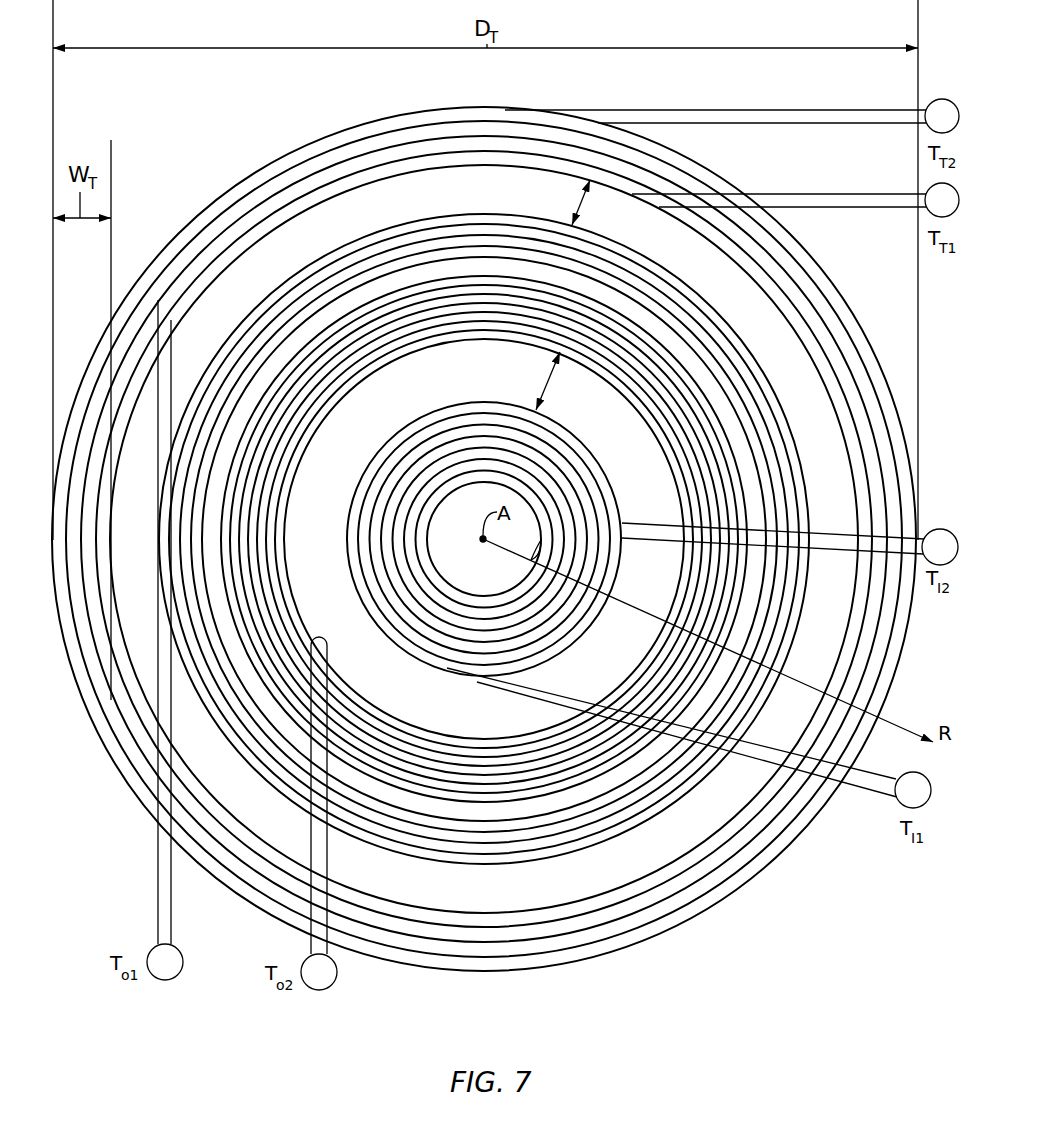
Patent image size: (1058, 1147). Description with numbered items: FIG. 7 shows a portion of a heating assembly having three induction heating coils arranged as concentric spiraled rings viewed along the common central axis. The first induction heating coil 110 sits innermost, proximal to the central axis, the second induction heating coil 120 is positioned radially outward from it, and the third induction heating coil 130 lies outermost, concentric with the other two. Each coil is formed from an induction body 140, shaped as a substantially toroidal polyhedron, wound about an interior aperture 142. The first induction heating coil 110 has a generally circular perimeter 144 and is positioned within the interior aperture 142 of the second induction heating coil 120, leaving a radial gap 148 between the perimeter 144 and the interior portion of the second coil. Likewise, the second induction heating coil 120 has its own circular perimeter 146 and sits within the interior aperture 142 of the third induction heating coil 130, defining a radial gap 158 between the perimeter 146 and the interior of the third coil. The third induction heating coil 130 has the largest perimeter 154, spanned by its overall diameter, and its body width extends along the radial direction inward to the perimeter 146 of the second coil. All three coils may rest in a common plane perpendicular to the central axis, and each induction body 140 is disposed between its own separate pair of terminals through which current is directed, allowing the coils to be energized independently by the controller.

The first induction heating coil 110 is at (442, 625).
The second induction heating coil 120 is at (455, 815).
The third induction heating coil 130 is at (393, 933).
The induction body 140 is at (210, 230).
The interior aperture 142 is at (267, 262).
The perimeter 144 is at (347, 578).
The perimeter 146 is at (553, 865).
The radial gap 148 is at (550, 378).
The perimeter 154 is at (763, 870).
The radial gap 158 is at (582, 205).